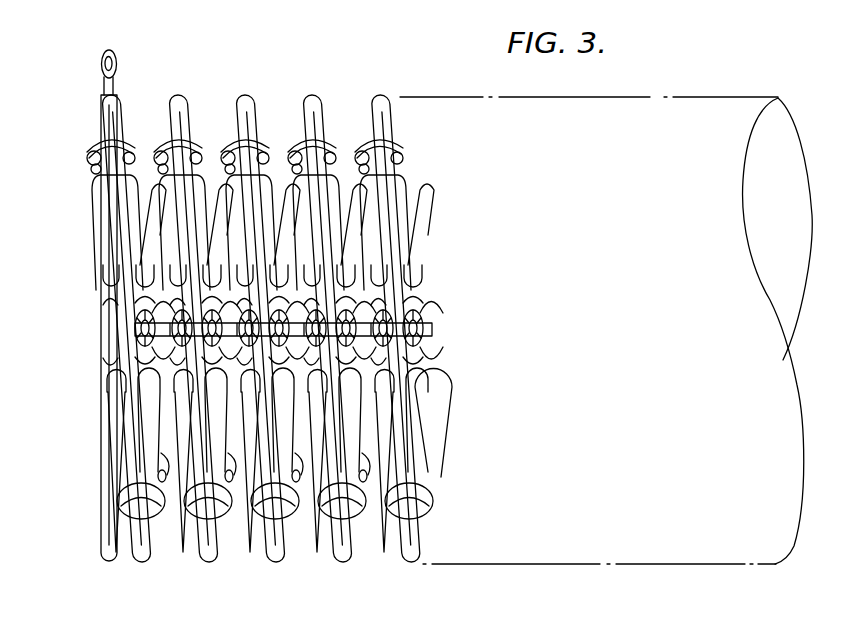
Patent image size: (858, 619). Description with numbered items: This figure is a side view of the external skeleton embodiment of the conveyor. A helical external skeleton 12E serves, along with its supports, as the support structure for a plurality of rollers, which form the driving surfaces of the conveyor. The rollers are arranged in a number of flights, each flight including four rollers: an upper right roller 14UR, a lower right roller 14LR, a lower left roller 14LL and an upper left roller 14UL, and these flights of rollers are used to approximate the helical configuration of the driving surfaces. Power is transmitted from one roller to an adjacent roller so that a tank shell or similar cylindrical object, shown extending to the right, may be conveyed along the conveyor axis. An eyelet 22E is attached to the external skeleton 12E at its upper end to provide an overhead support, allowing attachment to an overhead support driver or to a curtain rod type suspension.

The eyelet 22E is at (117, 67).
The helical external skeleton 12E is at (180, 96).
The upper left roller 14UL is at (215, 165).
The upper right roller 14UR is at (345, 180).
The lower left roller 14LL is at (222, 502).
The lower right roller 14LR is at (176, 538).